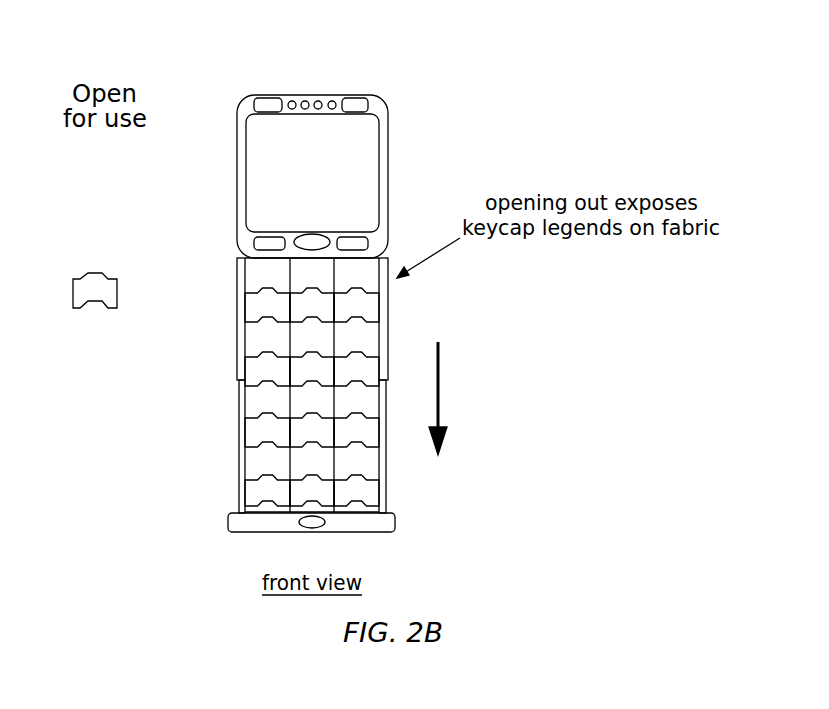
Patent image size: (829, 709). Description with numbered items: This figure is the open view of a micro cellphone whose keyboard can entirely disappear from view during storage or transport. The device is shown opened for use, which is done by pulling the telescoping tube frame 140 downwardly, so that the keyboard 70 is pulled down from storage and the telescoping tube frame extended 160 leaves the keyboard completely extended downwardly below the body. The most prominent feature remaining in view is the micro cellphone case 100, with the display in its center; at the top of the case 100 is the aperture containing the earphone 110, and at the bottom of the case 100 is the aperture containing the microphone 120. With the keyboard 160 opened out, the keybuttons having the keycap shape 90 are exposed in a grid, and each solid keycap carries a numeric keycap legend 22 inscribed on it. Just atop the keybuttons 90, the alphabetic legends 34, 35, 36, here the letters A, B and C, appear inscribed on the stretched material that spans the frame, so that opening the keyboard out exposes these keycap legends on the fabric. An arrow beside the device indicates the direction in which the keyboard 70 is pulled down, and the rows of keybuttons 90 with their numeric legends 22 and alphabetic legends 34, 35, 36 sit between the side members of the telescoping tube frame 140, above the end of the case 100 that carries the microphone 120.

The micro cellphone case 100 is at (345, 146).
The micro cellphone earphone 110 is at (318, 93).
The micro cellphone microphone 120 is at (302, 532).
The telescoping tube frame 140 is at (237, 357).
The telescoping tube frame extended (keyboard open) 160 is at (388, 308).
The numeric keycap legend on solid keycap 22 is at (258, 307).
The alphabetic legend "A" inscribed on stretched material 34 is at (232, 340).
The alphabetic legend "B" inscribed on stretched material 35 is at (232, 340).
The alphabetic legend "C" inscribed on stretched material 36 is at (285, 274).
The keyboard pulled down from storage 70 is at (517, 437).
The keycap shape 90 is at (107, 390).